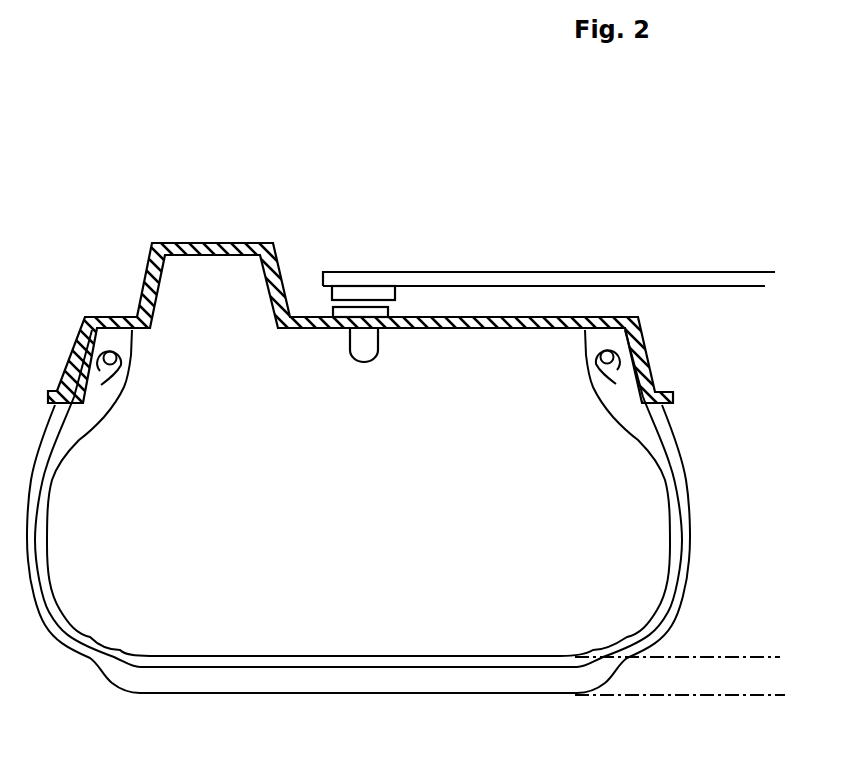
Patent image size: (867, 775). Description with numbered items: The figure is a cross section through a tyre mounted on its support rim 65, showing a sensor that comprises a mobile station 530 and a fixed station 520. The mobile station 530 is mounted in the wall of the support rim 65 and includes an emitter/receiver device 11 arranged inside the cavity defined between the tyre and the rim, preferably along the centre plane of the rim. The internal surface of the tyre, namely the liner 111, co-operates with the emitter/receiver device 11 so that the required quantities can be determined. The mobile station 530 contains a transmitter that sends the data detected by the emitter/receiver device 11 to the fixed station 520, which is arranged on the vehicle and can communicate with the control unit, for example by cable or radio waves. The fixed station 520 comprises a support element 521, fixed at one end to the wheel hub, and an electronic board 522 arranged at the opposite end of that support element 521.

The support rim 65 is at (199, 243).
The fixed station 520 is at (503, 278).
The support element 521 is at (685, 286).
The electronic board 522 is at (353, 293).
The mobile station 530 is at (392, 311).
The emitter/receiver device 11 is at (363, 347).
The liner 111 is at (340, 657).